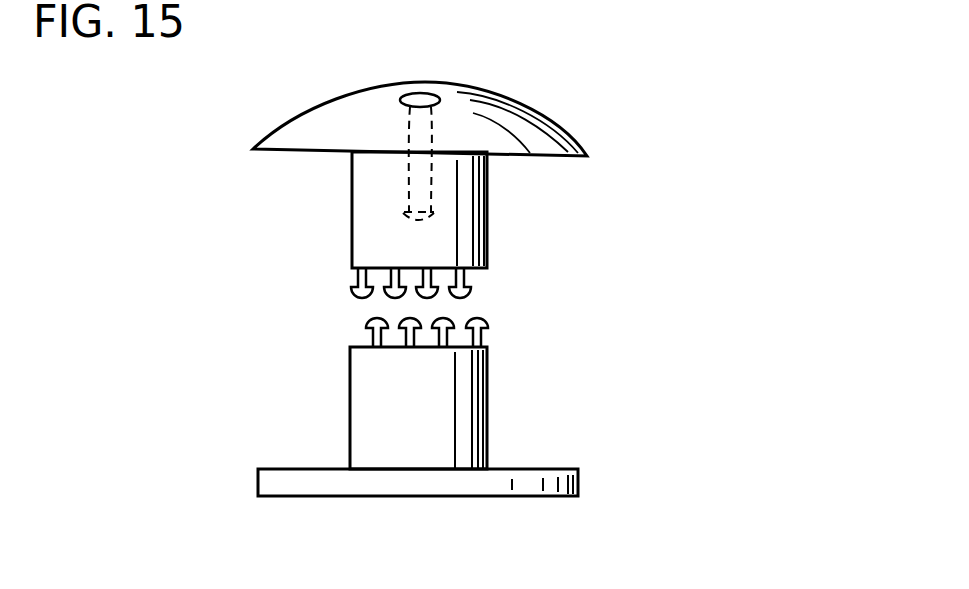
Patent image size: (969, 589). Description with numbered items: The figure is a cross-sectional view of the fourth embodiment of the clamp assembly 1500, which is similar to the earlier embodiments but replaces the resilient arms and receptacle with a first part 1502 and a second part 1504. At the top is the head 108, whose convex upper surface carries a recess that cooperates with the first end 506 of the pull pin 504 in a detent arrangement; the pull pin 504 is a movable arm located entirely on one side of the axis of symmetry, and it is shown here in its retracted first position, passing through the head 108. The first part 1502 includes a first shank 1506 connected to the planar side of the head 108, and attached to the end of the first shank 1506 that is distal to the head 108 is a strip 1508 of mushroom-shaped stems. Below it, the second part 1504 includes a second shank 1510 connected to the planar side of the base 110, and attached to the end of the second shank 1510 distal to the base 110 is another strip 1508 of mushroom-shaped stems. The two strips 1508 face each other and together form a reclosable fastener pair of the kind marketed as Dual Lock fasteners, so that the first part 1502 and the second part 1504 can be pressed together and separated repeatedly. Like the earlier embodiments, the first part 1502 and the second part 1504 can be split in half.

The connector assembly 1500 is at (641, 162).
The head 108 is at (512, 124).
The first end 506 is at (421, 96).
The pull pin 504 is at (413, 130).
The first part 1502 is at (322, 210).
The first shank 1506 is at (480, 210).
The strip of mushroom-shaped stems 1508 is at (471, 296).
The second part 1504 is at (324, 391).
The second shank 1510 is at (473, 410).
The base 110 is at (578, 483).